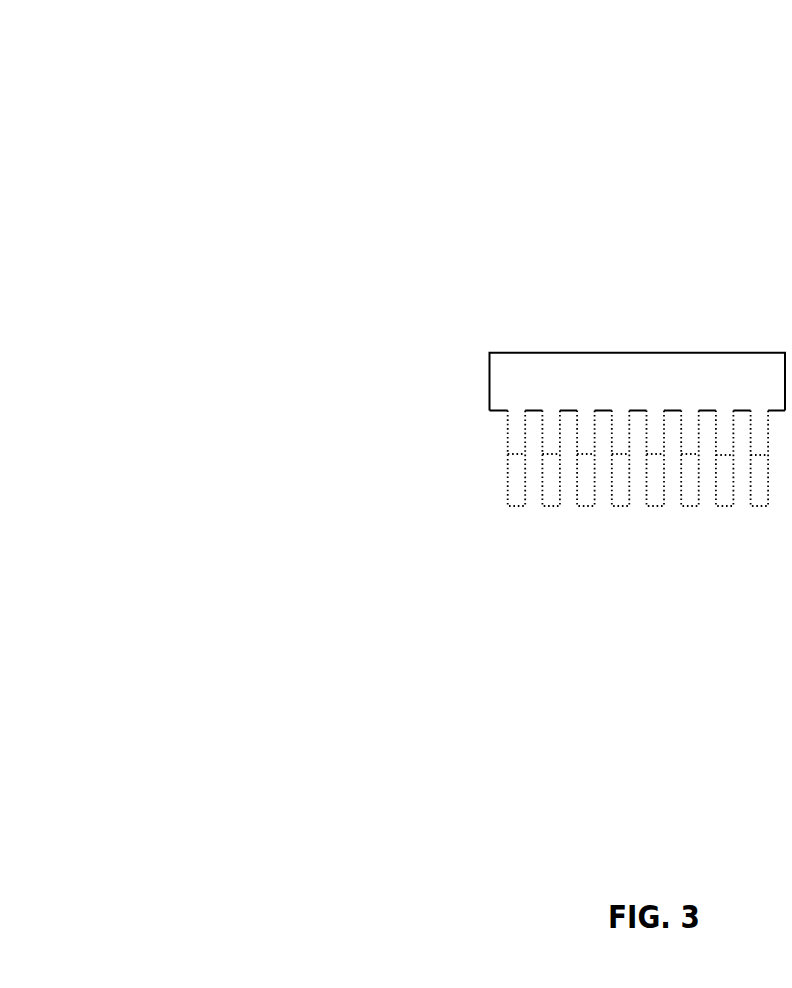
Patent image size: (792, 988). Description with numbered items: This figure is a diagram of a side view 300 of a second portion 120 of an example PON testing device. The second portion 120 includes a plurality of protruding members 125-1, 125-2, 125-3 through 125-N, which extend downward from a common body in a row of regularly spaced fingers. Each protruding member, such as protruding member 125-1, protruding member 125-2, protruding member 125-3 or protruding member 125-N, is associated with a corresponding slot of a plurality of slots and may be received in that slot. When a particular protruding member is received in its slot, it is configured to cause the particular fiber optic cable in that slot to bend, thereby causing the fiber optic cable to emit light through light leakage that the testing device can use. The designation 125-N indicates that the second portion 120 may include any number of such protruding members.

The side view 300 is at (162, 33).
The second portion 120 is at (385, 274).
The protruding member 125-1 is at (512, 500).
The protruding member 125-2 is at (553, 500).
The protruding member 125-3 is at (585, 500).
The protruding member 125-N is at (760, 493).